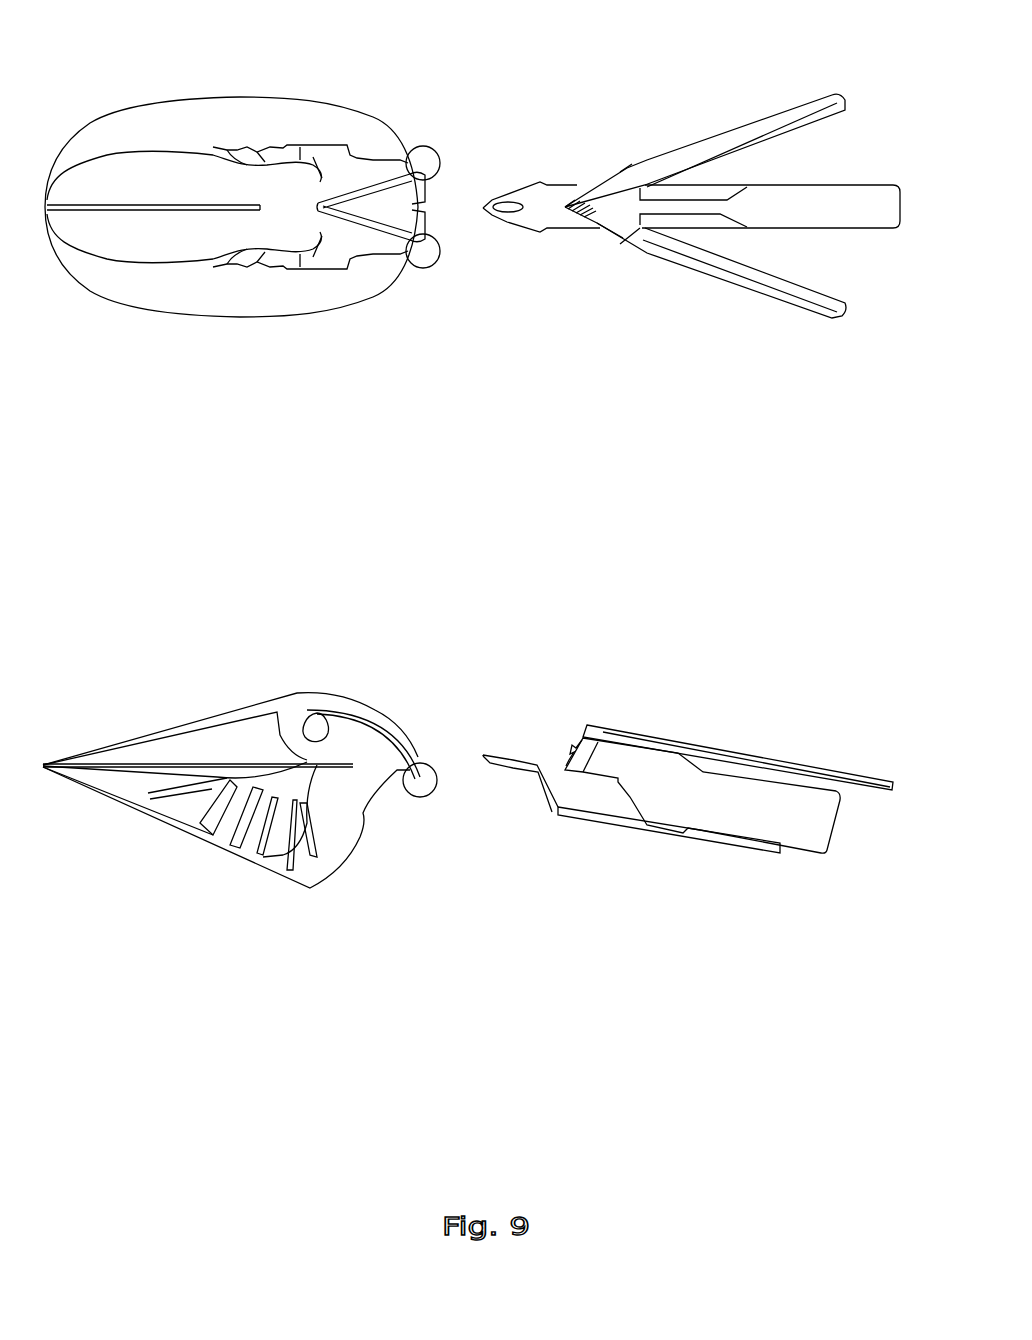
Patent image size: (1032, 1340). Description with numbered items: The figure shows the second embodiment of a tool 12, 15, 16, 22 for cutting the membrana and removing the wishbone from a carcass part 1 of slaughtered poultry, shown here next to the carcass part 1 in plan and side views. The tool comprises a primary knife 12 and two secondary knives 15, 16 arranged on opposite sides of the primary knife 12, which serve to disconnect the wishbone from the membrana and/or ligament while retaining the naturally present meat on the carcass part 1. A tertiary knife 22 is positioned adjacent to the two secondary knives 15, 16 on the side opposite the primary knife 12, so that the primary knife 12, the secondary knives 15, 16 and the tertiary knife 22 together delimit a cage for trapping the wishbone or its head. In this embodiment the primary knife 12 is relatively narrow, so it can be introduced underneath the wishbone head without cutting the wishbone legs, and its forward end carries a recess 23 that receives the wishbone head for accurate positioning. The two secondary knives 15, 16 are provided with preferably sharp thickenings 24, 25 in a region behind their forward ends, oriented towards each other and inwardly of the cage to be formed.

The carcass part 1 is at (178, 302).
The primary knife 12 is at (527, 234).
The secondary knife 15 is at (687, 140).
The secondary knife 16 is at (677, 268).
The tertiary knife 22 is at (852, 200).
The recess 23 is at (508, 205).
The thickening 24 is at (628, 165).
The thickening 25 is at (623, 248).